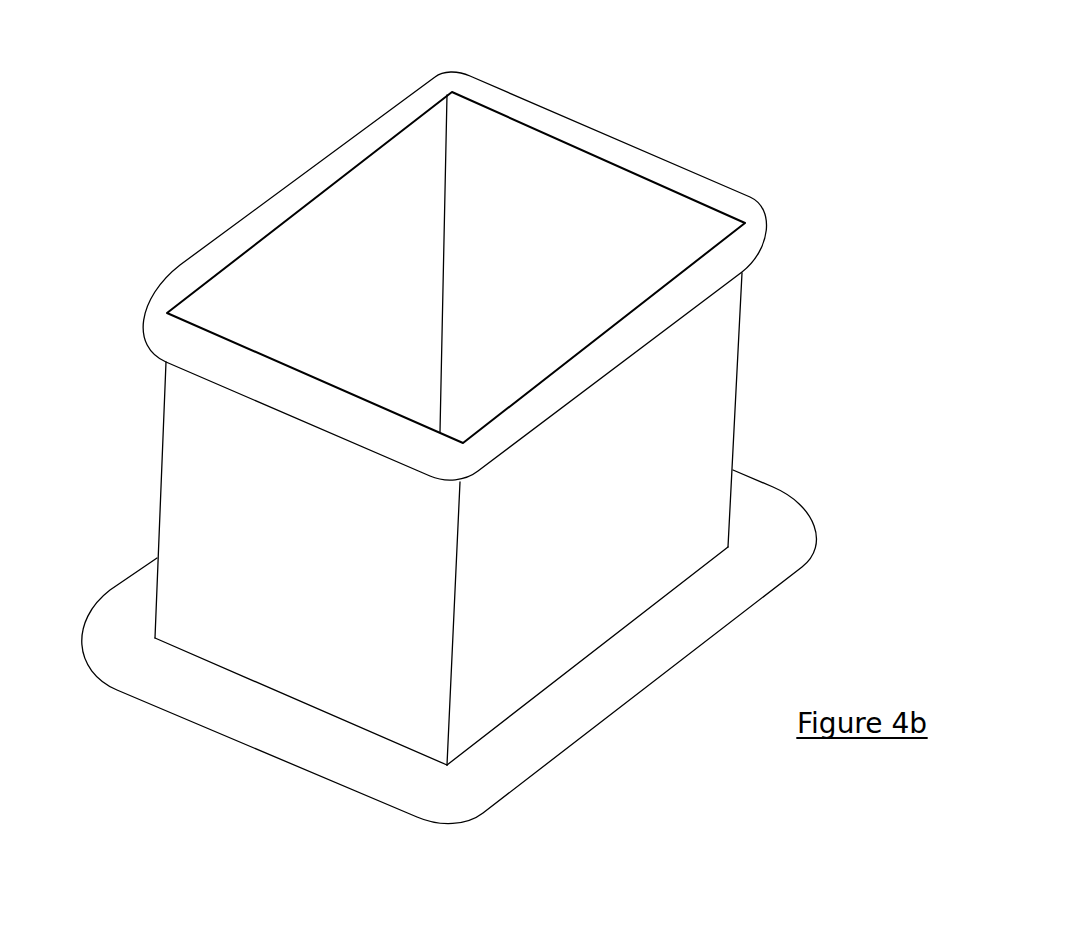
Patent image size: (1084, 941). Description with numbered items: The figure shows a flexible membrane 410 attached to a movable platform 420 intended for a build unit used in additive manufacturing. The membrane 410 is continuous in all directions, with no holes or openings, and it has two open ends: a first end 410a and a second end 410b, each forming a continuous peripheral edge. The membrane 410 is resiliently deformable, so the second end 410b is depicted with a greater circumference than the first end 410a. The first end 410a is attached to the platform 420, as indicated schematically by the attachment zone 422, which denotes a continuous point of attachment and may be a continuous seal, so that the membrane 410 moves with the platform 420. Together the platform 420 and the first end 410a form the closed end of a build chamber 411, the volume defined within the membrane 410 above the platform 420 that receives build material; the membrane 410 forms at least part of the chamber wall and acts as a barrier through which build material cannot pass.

The membrane 410 is at (415, 405).
The first end 410a is at (588, 670).
The second end 410b is at (639, 377).
The build chamber 411 is at (373, 297).
The movable platform 420 is at (803, 567).
The attachment zone 422 is at (218, 667).